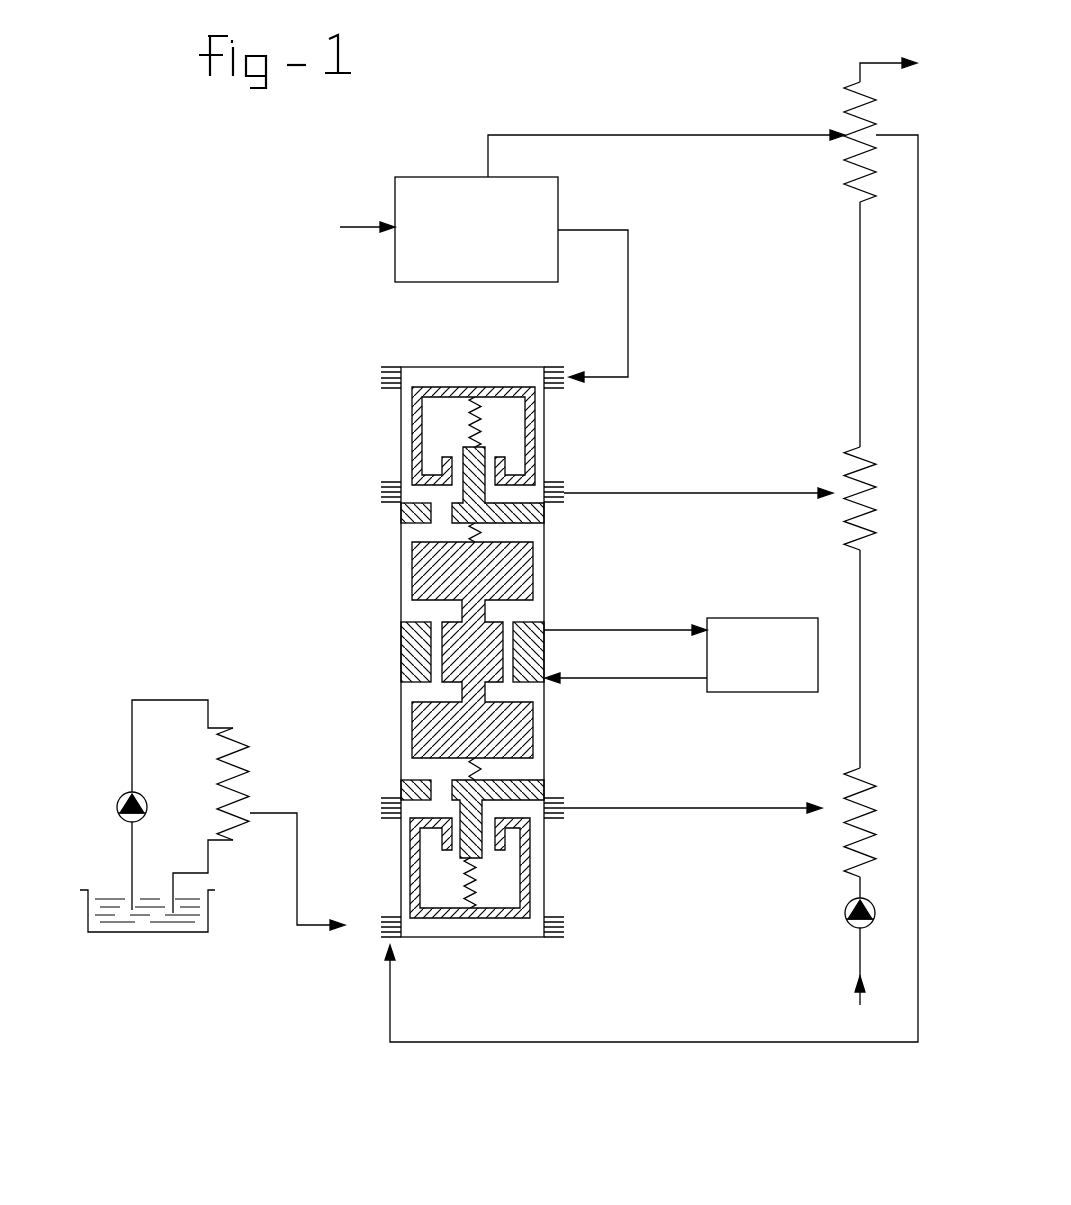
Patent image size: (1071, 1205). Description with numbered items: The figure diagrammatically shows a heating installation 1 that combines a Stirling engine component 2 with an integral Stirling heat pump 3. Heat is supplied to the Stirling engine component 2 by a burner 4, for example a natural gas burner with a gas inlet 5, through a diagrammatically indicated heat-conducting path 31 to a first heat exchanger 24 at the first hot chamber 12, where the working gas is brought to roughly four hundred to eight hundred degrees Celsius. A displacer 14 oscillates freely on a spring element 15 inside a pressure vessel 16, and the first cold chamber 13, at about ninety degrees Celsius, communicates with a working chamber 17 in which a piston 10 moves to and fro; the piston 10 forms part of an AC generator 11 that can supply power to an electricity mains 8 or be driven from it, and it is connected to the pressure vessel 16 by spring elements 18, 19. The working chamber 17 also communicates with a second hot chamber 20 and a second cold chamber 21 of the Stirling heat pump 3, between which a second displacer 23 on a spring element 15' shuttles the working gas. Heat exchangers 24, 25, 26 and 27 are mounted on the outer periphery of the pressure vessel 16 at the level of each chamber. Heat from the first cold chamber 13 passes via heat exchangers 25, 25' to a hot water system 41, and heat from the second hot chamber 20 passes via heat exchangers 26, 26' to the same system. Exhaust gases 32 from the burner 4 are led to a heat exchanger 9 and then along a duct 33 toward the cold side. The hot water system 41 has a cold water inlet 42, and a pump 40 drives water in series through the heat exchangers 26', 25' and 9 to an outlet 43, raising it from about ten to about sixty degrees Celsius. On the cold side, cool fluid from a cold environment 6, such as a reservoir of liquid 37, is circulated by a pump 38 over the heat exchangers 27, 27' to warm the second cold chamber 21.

The heating installation 1 is at (286, 398).
The Stirling engine component 2 is at (332, 537).
The Stirling heat pump 3 is at (346, 720).
The burner 4 is at (548, 200).
The gas inlet 5 is at (355, 226).
The cold environment 6 is at (175, 692).
The electricity mains 8 is at (770, 680).
The heat exchanger 9 is at (848, 180).
The piston 10 is at (526, 738).
The AC generator 11 is at (412, 640).
The first hot chamber 12 is at (450, 378).
The first cold chamber 13 is at (528, 492).
The displacer 14 is at (535, 430).
The spring element 15 is at (414, 427).
The spring element 15' is at (412, 885).
The pressure vessel 16 is at (542, 875).
The working chamber 17 is at (548, 535).
The spring element 18 is at (468, 537).
The spring element 19 is at (470, 770).
The second hot chamber 20 is at (422, 812).
The second cold chamber 21 is at (422, 925).
The second displacer 23 is at (510, 915).
The heat exchanger 24 is at (378, 378).
The heat exchanger 25 is at (443, 504).
The heat exchanger 25' is at (720, 490).
The heat exchanger 26 is at (442, 798).
The heat exchanger 26' is at (720, 822).
The heat exchanger 27 is at (447, 943).
The heat exchanger 27' is at (267, 777).
The heat-conducting path 31 is at (628, 310).
The exhaust gases 32 is at (660, 135).
The duct 33 is at (918, 640).
The reservoir of liquid 37 is at (210, 915).
The pump 38 is at (148, 810).
The pump 40 is at (845, 913).
The hot water system 41 is at (858, 347).
The cold water inlet 42 is at (852, 980).
The outlet 43 is at (893, 45).